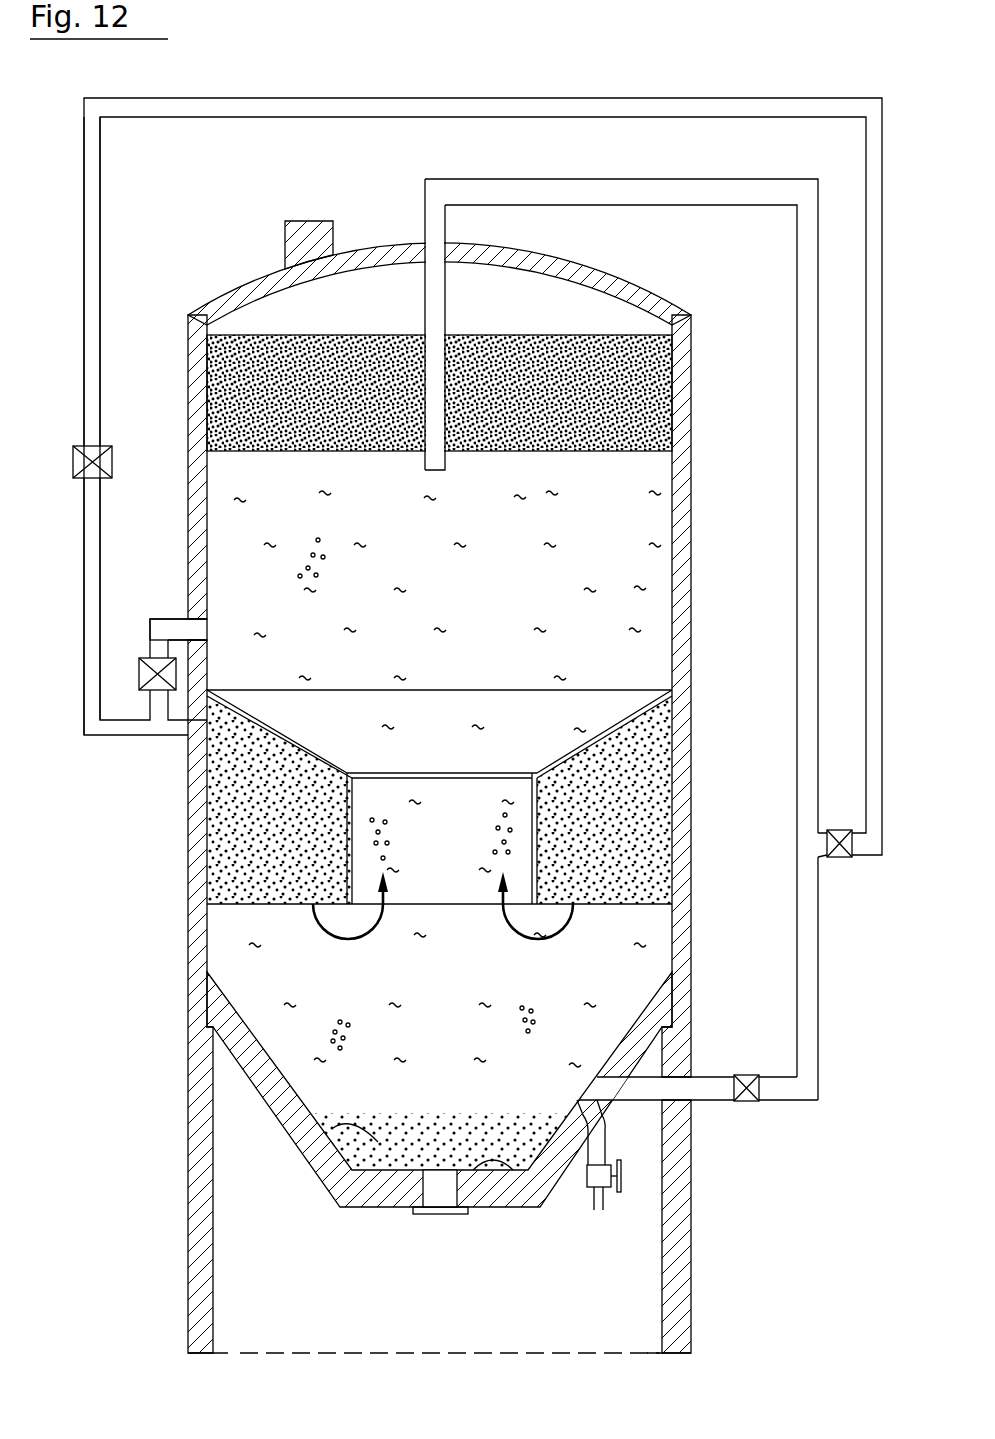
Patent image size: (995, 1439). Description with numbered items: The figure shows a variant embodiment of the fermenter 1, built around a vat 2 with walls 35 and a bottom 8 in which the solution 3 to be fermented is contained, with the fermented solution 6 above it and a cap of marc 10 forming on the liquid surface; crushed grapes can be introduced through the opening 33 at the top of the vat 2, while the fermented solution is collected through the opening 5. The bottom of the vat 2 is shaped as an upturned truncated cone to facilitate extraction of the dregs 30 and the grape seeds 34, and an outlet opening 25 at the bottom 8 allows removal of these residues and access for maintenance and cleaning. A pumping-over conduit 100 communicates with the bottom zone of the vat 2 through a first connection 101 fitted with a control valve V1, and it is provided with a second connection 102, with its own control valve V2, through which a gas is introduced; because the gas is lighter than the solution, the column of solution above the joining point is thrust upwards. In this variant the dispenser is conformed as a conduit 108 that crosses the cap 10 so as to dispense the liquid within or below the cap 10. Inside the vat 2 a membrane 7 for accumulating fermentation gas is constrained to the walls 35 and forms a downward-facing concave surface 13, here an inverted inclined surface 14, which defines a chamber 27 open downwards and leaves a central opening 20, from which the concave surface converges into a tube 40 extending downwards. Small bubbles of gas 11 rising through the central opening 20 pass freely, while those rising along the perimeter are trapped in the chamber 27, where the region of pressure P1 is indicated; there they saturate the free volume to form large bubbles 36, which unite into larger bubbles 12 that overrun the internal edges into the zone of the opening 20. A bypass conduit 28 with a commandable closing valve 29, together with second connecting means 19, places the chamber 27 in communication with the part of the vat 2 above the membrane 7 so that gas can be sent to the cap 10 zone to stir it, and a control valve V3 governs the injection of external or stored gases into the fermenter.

The fermenter 1 is at (802, 59).
The vat 2 is at (205, 1030).
The solution to be fermented 3 is at (446, 1028).
The opening for collecting the fermented solution 5 is at (588, 1187).
The fermented solution 6 is at (446, 606).
The membrane for accumulation of fermentation gas 7 is at (587, 722).
The bottom 8 is at (473, 1170).
The cap of marc 10 is at (354, 404).
The small bubbles of gas 11 is at (528, 1020).
The larger bubbles 12 is at (300, 572).
The concave surface 13 is at (238, 738).
The inverted inclined surface 14 is at (622, 700).
The second connecting means 19 is at (127, 637).
The opening 20 is at (462, 849).
The outlet opening 25 is at (432, 1214).
The chamber 27 is at (643, 737).
The bypass conduit 28 is at (179, 627).
The commandable closing valve 29 is at (143, 675).
The dregs 30 is at (543, 1108).
The opening at the top of the vat 33 is at (325, 221).
The grape seeds 34 is at (333, 1128).
The walls 35 is at (666, 496).
The large bubbles 36 is at (630, 826).
The tube 40 is at (537, 890).
The pumping-over conduit 100 is at (781, 280).
The first connection 101 is at (725, 1117).
The second connection 102 is at (854, 180).
The conduit 108 is at (450, 266).
The pressure region P1 is at (279, 800).
The control valve V1 is at (757, 1075).
The control valve V2 is at (841, 873).
The control valve V3 is at (79, 428).